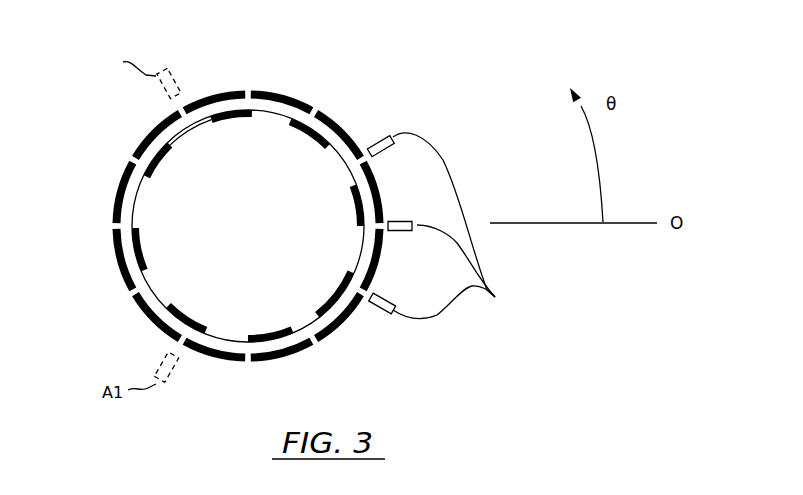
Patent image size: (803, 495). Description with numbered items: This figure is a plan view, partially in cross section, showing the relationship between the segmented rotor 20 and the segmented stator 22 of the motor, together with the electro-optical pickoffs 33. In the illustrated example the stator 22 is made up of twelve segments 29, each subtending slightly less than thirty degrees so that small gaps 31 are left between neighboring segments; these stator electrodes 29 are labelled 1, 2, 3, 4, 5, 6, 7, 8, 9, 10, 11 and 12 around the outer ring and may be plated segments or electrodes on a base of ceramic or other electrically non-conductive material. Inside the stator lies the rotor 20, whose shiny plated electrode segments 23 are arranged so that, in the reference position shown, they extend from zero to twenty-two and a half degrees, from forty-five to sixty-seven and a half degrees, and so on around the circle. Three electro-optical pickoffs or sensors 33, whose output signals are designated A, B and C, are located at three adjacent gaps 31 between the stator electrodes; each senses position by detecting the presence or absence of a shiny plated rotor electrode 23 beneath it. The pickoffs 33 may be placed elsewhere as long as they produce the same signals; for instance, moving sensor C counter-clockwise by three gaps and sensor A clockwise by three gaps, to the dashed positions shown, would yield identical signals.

The stator electrode 1 is at (375, 193).
The stator electrode 2 is at (338, 134).
The stator electrode 3 is at (281, 91).
The stator electrode 4 is at (215, 90).
The stator electrode 5 is at (158, 135).
The stator electrode 6 is at (118, 193).
The stator electrode 7 is at (117, 259).
The stator electrode 8 is at (155, 316).
The stator electrode 9 is at (215, 360).
The stator electrode 10 is at (281, 360).
The stator electrode 11 is at (343, 316).
The stator electrode 12 is at (382, 259).
The segmented rotor 20 is at (269, 130).
The segmented stator 22 is at (342, 101).
The rotor segment 23 is at (220, 118).
The stator segment 29 is at (199, 95).
The gap 31 is at (247, 92).
The electro-optical pickoff 33 is at (493, 297).